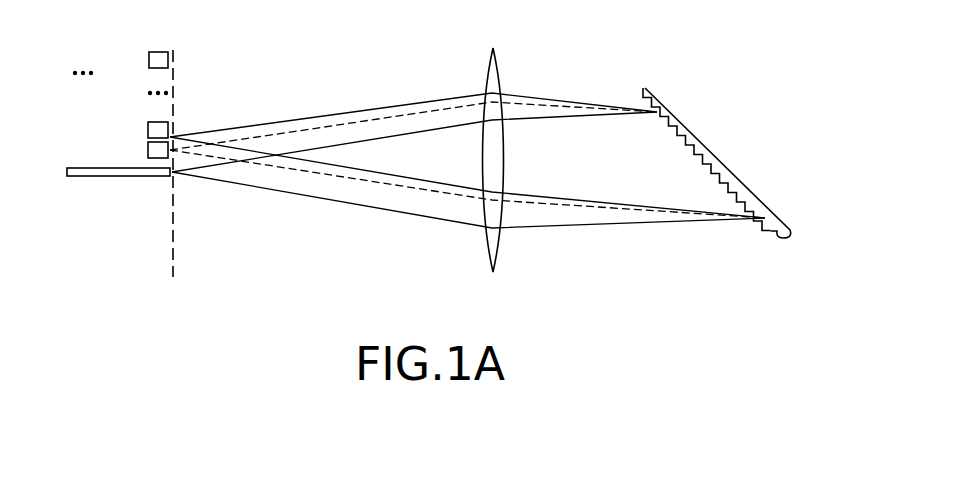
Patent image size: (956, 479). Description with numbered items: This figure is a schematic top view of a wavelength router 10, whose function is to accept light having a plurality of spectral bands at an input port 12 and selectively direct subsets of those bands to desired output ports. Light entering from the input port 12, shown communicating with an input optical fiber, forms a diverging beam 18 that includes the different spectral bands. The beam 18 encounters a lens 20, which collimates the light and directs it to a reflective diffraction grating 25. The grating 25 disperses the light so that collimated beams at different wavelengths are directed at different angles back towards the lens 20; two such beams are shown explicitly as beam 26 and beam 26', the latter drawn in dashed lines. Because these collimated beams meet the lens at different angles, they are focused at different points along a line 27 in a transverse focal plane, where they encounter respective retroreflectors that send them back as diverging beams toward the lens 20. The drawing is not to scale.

The wavelength router 10 is at (186, 289).
The input port 12 is at (163, 177).
The diverging beam 18 is at (213, 165).
The lens 20 is at (493, 272).
The reflective diffraction grating 25 is at (645, 88).
The collimated beam 26 is at (467, 136).
The collimated beam 26' is at (467, 135).
The line in transverse focal plane 27 is at (173, 256).